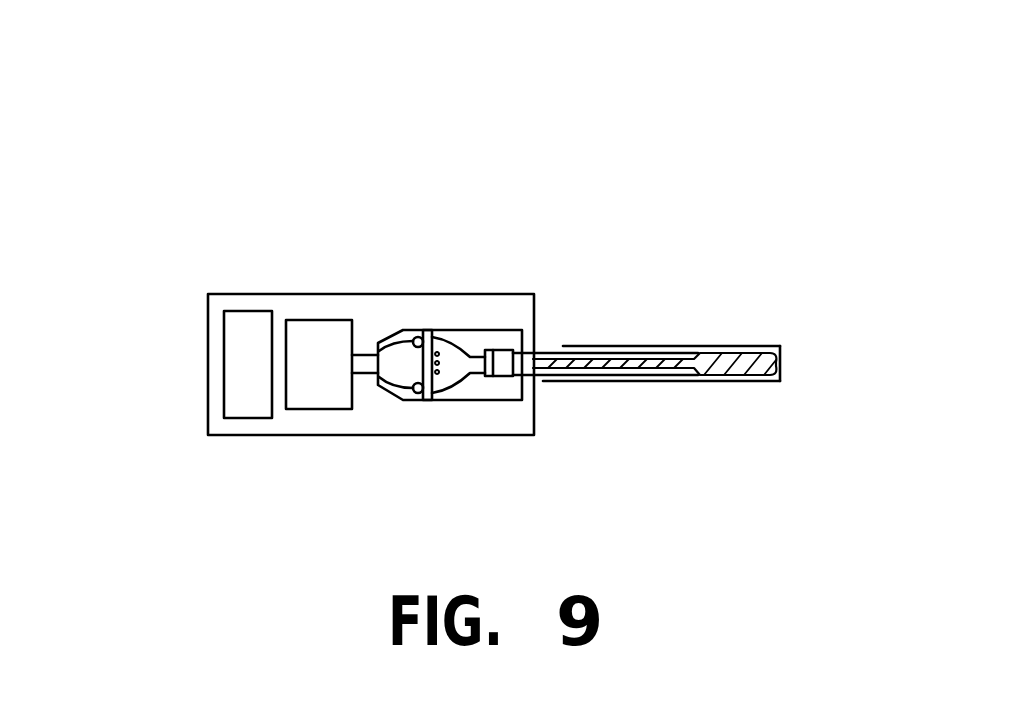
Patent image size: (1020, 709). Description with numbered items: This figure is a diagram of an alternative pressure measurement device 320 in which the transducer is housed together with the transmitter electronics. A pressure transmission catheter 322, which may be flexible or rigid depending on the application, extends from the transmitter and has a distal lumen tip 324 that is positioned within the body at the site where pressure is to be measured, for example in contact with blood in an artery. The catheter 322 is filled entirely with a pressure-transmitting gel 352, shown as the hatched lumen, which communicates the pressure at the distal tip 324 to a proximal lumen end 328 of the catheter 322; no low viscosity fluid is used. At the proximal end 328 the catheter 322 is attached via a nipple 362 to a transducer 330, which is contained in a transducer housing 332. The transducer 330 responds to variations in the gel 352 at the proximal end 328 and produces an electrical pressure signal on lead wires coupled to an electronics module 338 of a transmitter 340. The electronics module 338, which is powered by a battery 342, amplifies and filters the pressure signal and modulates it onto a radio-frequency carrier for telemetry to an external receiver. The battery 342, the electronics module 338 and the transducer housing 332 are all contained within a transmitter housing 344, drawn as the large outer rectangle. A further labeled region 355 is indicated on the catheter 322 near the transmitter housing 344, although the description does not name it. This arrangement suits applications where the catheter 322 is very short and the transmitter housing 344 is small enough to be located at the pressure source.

The pressure measurement device 320 is at (456, 122).
The pressure transmission catheter 322 is at (765, 282).
The distal lumen tip 324 is at (781, 347).
The proximal lumen end 328 is at (545, 378).
The transducer 330 is at (500, 376).
The transducer housing 332 is at (499, 305).
The electronics module 338 is at (318, 409).
The transmitter 340 is at (163, 264).
The battery 342 is at (242, 418).
The transmitter housing 344 is at (295, 277).
The pressure-transmitting gel 352 is at (688, 356).
The catheter proximal portion 355 is at (644, 317).
The nipple 362 is at (536, 354).